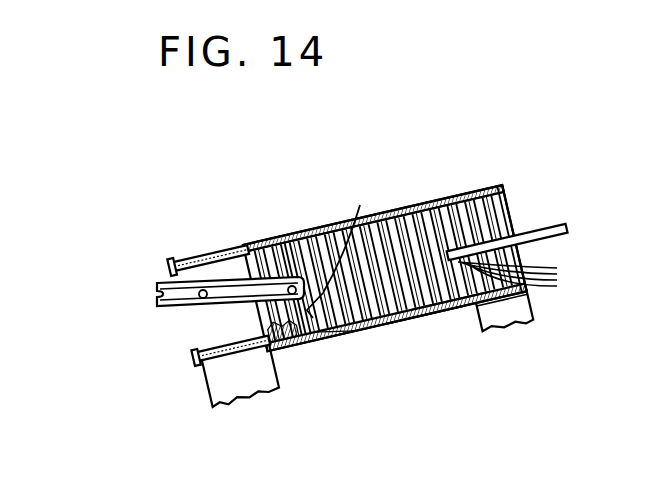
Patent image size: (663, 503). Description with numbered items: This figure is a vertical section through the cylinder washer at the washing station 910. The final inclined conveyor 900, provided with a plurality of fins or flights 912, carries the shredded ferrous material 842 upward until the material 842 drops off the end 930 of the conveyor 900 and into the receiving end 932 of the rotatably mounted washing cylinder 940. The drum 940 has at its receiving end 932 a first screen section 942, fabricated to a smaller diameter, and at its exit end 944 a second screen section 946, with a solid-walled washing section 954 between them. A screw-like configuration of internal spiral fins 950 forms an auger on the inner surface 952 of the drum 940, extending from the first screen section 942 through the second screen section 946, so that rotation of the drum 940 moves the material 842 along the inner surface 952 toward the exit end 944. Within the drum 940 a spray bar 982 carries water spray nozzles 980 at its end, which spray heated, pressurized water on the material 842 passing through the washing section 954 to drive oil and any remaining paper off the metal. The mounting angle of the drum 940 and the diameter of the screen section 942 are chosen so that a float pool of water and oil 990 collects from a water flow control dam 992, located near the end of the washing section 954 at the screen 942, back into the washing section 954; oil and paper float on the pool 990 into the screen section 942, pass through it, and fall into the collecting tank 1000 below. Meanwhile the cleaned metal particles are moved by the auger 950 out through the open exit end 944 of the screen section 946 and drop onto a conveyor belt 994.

The washing station 910 is at (346, 160).
The washing cylinder 940 is at (470, 188).
The second screen section 946 is at (459, 188).
The exit end 944 is at (528, 184).
The ferrous material 842 is at (361, 205).
The end of conveyor 930 is at (293, 290).
The receiving end 932 is at (155, 262).
The first screen section 942 is at (211, 252).
The fins or flights 912 is at (157, 296).
The final inclined conveyor 900 is at (158, 311).
The spray bar 982 is at (542, 236).
The water spray nozzles 980 is at (530, 277).
The conveyor belt 994 is at (537, 316).
The inner surface 952 is at (433, 323).
The internal spiral fins 950 is at (402, 328).
The washing section 954 is at (383, 337).
The water flow control dam 992 is at (279, 353).
The float pool of water and oil 990 is at (306, 353).
The collecting tank 1000 is at (241, 390).